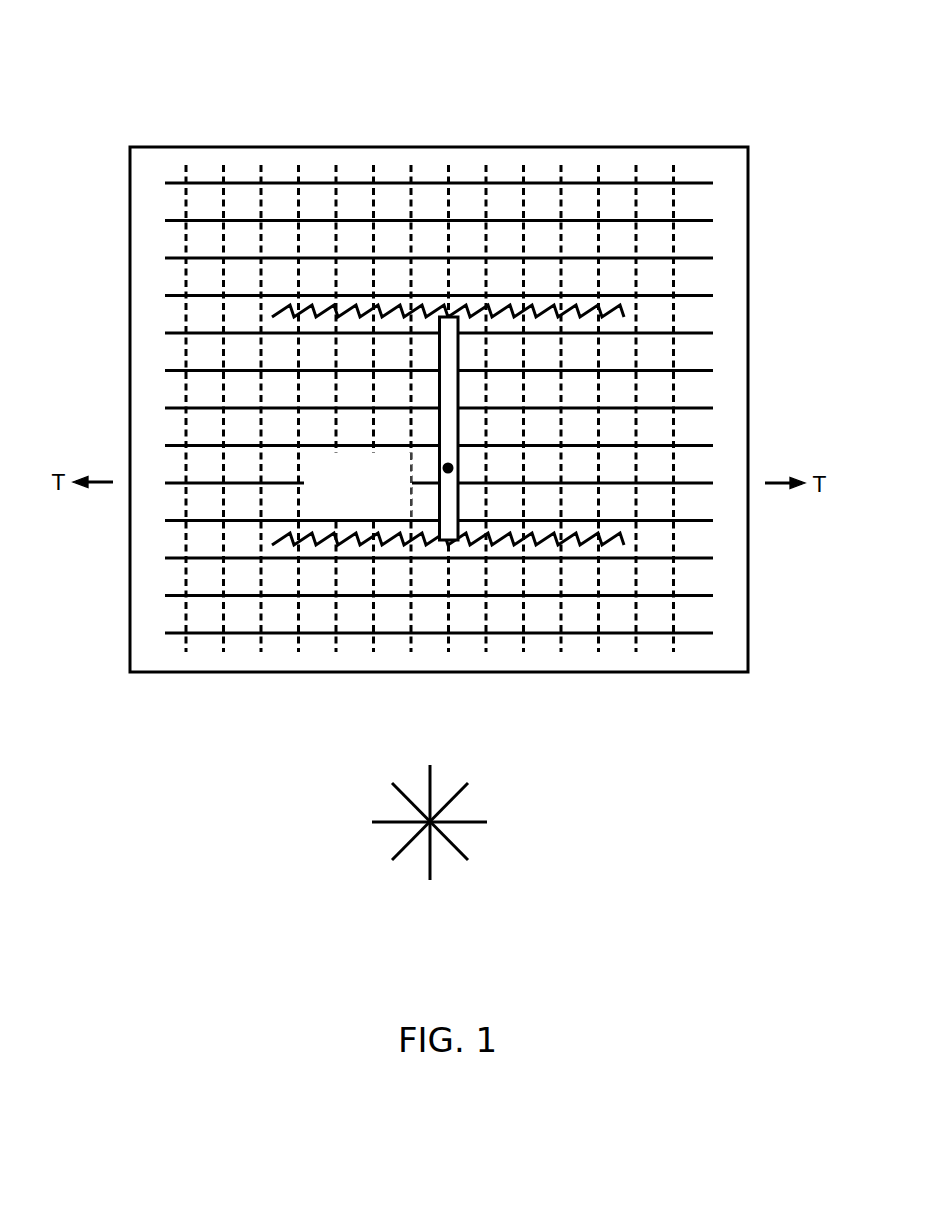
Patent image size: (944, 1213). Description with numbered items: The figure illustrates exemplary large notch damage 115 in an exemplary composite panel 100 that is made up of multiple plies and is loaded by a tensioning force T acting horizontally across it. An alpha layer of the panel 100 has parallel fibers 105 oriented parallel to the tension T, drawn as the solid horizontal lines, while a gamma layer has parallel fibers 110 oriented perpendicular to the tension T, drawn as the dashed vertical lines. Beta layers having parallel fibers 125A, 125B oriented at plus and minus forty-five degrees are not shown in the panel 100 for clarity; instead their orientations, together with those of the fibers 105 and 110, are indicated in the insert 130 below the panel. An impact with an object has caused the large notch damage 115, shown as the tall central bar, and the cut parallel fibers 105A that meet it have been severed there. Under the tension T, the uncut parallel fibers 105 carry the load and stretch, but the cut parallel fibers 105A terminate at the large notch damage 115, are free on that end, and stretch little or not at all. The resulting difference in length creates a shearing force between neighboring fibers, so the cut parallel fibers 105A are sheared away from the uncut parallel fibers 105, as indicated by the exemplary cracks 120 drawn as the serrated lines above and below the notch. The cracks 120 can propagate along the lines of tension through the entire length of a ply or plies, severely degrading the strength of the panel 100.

The composite panel 100 is at (280, 72).
The parallel fibers 105 is at (165, 185).
The cut parallel fibers 105A is at (165, 371).
The parallel fibers 110 is at (259, 167).
The large notch damage 115 is at (446, 469).
The cracks 120 is at (402, 308).
The parallel fibers 125A is at (405, 807).
The parallel fibers 125B is at (455, 807).
The insert 130 is at (400, 820).